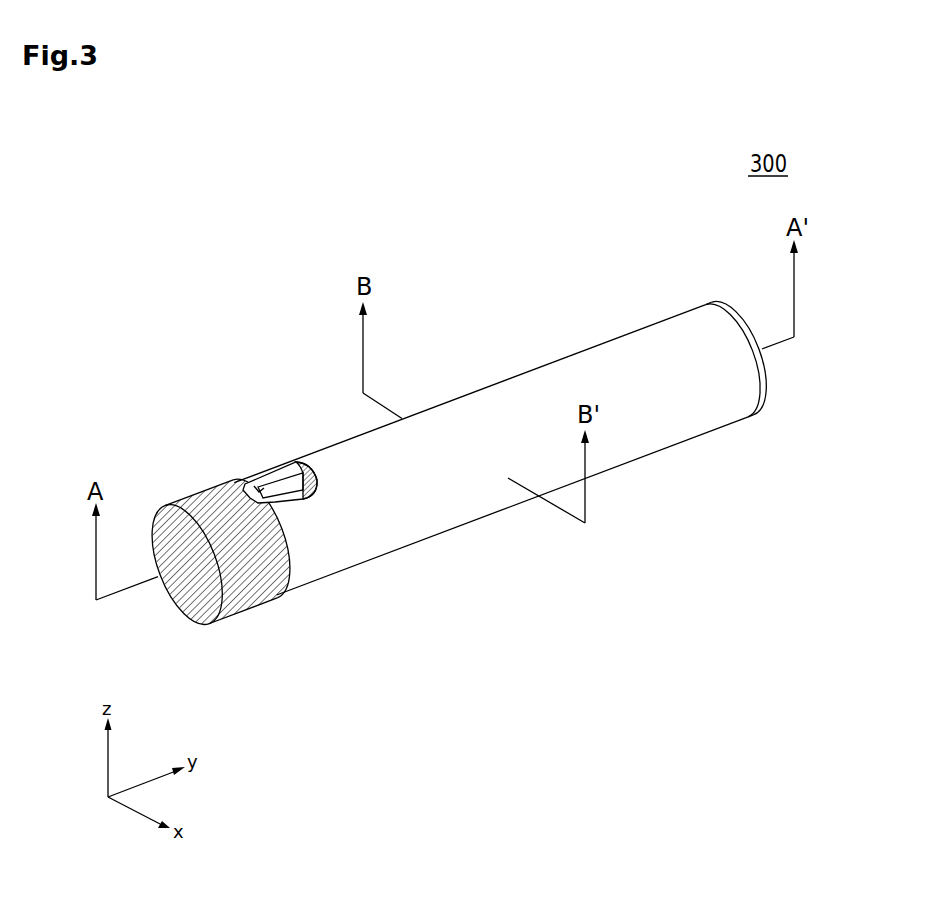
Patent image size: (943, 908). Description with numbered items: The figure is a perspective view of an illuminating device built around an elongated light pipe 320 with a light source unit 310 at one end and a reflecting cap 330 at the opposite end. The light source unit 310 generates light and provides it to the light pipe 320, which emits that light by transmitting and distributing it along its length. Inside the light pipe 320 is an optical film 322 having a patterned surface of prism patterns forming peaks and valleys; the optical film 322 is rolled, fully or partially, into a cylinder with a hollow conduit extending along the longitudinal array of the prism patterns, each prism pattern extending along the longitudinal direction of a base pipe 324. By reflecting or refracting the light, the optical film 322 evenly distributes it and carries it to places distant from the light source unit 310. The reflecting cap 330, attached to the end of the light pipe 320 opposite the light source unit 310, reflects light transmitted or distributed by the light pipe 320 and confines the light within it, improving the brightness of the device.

The light source unit 310 is at (257, 580).
The light pipe 320 is at (342, 552).
The optical film 322 is at (258, 483).
The base pipe 324 is at (303, 460).
The reflecting cap 330 is at (765, 382).